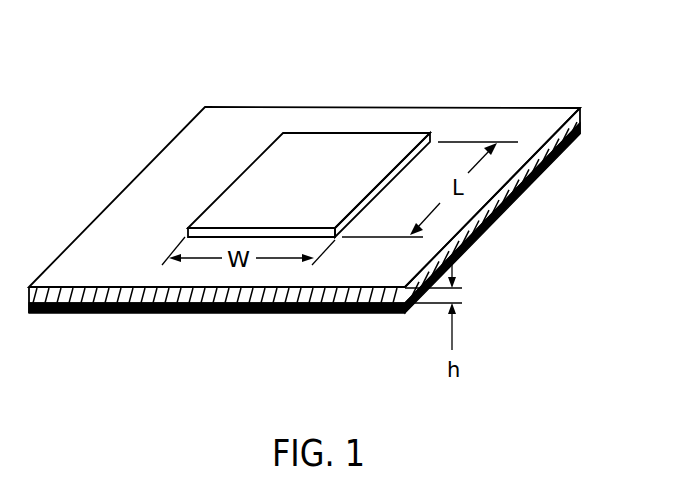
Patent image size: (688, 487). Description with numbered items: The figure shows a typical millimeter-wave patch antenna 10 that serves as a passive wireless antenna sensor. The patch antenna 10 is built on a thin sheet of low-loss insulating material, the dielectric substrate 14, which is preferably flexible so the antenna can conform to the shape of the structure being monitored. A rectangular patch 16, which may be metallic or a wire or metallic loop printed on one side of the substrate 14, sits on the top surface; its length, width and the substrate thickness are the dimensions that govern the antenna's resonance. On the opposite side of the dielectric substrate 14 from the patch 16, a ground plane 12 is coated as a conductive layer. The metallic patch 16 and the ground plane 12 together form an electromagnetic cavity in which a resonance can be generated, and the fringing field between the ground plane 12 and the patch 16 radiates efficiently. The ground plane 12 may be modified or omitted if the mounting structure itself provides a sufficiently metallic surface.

The patch antenna 10 is at (543, 66).
The ground plane 12 is at (272, 313).
The dielectric substrate 14 is at (490, 210).
The rectangular patch 16 is at (265, 178).